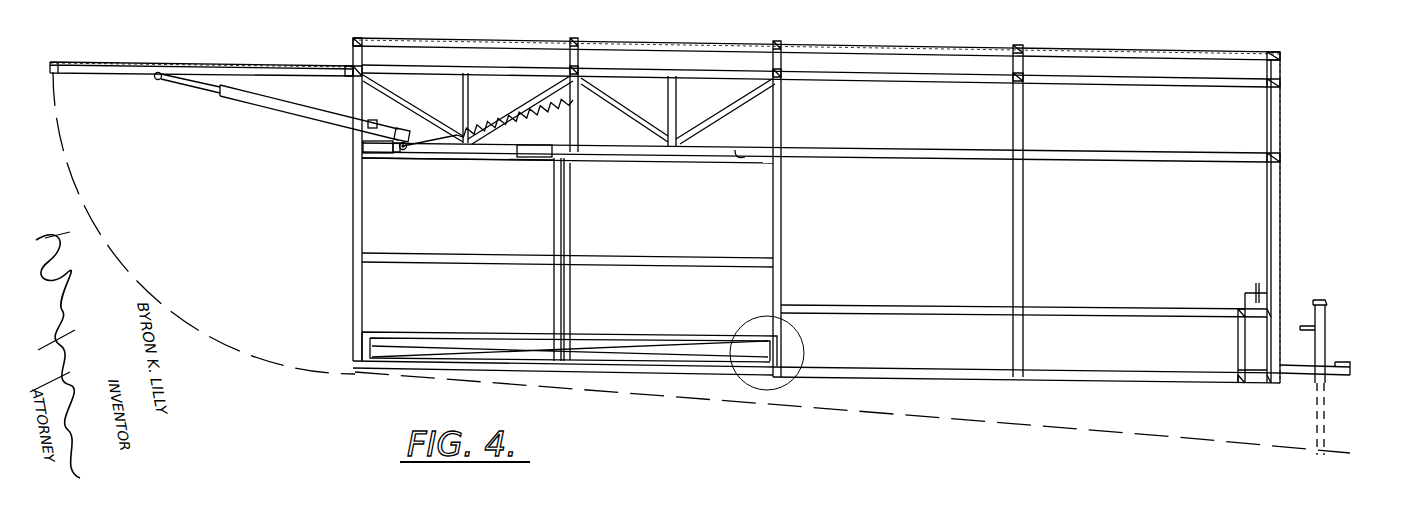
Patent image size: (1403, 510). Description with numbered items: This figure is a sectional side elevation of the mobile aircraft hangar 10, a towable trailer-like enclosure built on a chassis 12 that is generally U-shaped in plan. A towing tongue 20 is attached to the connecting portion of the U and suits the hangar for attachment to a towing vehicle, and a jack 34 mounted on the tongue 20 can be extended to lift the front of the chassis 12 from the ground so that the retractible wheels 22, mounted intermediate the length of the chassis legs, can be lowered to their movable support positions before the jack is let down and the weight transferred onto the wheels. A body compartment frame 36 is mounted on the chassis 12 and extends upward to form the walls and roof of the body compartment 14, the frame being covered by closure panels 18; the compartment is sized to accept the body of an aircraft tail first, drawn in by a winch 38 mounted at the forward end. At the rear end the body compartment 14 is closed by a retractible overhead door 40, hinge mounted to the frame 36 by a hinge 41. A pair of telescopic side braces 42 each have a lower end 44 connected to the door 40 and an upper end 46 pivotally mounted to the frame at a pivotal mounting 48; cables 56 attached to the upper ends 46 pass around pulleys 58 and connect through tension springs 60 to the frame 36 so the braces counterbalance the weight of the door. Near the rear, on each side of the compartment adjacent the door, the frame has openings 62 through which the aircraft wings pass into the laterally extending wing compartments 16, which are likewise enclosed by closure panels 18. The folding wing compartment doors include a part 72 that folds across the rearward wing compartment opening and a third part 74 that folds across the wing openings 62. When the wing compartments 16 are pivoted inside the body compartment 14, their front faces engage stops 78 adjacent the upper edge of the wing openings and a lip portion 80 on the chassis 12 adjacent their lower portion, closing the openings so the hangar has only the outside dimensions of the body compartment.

The mobile aircraft hangar 10 is at (1292, 66).
The chassis 12 is at (903, 349).
The body compartment 14 is at (672, 217).
The wing compartments 16 is at (757, 205).
The closure panels 18 is at (1282, 210).
The towing tongue 20 is at (1290, 376).
The retractible wheels 22 is at (813, 286).
The jack 34 is at (1328, 320).
The body compartment frame 36 is at (1022, 128).
The winch 38 is at (1243, 300).
The retractible overhead door 40 is at (112, 60).
The hinge 41 is at (353, 77).
The telescopic side braces 42 is at (270, 113).
The lower end 44 is at (204, 90).
The upper end 46 is at (316, 117).
The pivotal mounting 48 is at (373, 120).
The cables 56 is at (430, 143).
The pulleys 58 is at (405, 152).
The tension springs 60 is at (532, 112).
The openings 62 is at (750, 155).
The second part of wing compartment door 72 is at (568, 240).
The third part of wing compartment door 74 is at (357, 233).
The stops 78 is at (378, 153).
The lip portion 80 is at (410, 334).